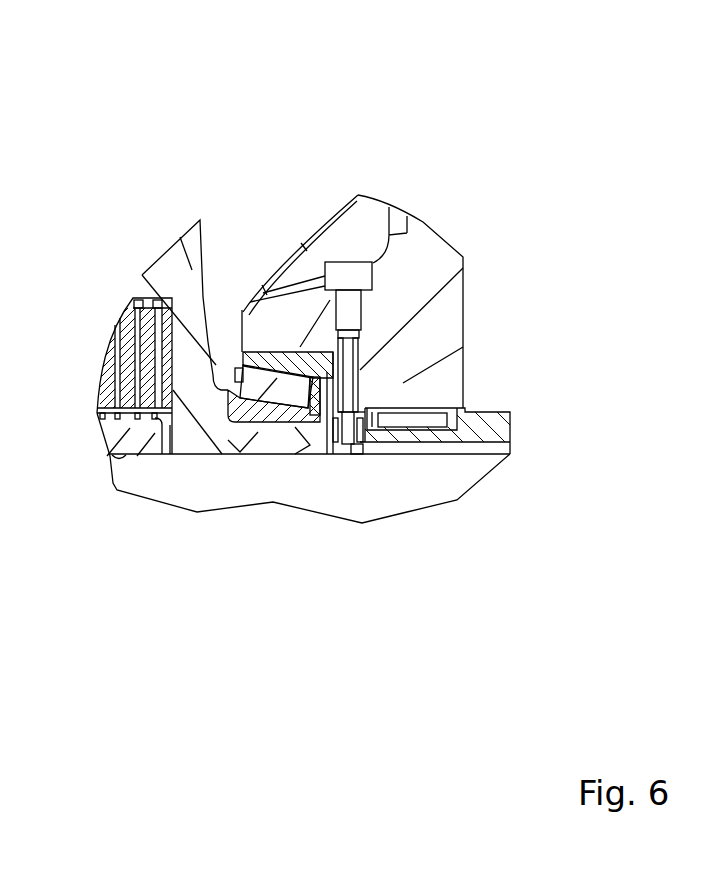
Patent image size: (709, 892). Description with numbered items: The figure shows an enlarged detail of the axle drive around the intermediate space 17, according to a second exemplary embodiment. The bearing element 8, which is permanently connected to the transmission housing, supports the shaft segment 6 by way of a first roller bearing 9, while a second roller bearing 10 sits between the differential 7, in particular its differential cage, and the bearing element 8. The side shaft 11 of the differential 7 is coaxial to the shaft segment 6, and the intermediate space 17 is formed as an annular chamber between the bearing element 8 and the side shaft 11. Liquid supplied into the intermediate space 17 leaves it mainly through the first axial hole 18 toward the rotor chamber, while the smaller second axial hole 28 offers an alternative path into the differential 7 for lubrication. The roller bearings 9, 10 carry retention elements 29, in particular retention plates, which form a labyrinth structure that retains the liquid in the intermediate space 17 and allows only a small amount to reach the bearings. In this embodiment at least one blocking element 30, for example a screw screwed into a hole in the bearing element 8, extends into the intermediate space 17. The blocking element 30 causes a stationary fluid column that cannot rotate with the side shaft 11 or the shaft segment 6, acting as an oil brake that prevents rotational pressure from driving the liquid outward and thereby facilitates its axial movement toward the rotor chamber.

The shaft segment 6 is at (497, 413).
The differential 7 is at (167, 283).
The bearing element 8 is at (415, 282).
The first roller bearing 9 is at (227, 454).
The second roller bearing 10 is at (420, 417).
The side shaft 11 is at (150, 473).
The intermediate space 17 is at (343, 464).
The first axial hole 18 is at (378, 463).
The second axial hole 28 is at (260, 457).
The retention element 29 is at (334, 446).
The blocking element 30 is at (347, 280).